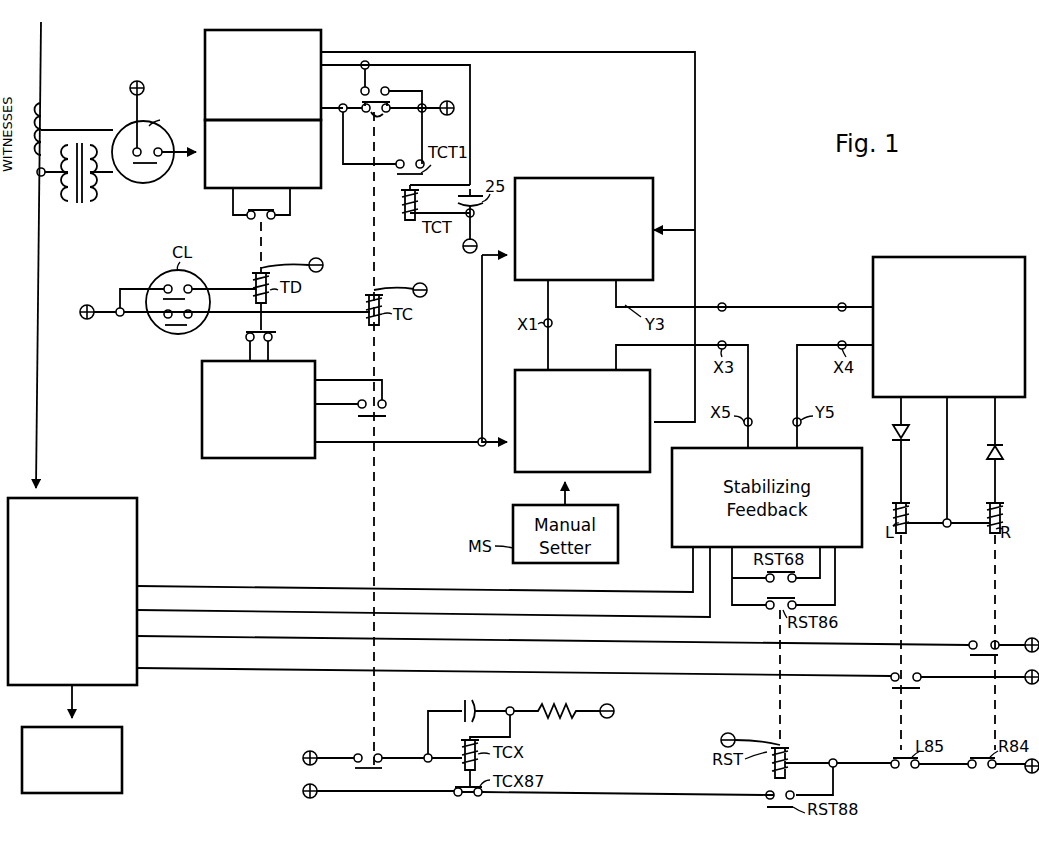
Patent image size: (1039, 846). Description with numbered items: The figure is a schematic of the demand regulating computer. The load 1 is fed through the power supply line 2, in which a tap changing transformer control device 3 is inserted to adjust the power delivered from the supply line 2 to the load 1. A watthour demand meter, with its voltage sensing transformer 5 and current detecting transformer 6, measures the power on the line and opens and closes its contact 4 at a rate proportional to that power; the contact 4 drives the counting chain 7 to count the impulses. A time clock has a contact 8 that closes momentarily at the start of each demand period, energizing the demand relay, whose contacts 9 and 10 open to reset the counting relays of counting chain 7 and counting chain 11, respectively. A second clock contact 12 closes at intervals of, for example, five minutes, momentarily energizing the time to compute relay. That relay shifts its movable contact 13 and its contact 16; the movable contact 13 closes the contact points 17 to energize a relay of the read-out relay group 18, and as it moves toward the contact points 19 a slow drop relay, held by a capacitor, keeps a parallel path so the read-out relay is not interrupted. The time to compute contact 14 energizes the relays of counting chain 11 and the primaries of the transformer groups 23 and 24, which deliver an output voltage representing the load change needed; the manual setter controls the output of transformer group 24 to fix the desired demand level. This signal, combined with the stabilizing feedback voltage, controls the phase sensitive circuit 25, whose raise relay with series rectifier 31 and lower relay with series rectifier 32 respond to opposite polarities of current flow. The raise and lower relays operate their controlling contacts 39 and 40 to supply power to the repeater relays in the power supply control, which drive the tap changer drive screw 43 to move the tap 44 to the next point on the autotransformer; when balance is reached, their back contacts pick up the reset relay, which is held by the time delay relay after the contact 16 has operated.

The load 1 is at (122, 748).
The power supply line 2 is at (38, 377).
The tap changing transformer control device 3 is at (137, 536).
The contact 4 is at (145, 165).
The voltage sensing transformer 5 is at (68, 190).
The current detecting transformer 6 is at (48, 117).
The counting chain 7 is at (312, 190).
The contact 8 is at (188, 299).
The contact 9 is at (265, 212).
The contact 10 is at (276, 340).
The counting chain 11 is at (202, 405).
The contact 12 is at (167, 332).
The movable contact 13 is at (362, 102).
The contact 14 is at (380, 418).
The contact 16 is at (380, 770).
The contact points 17 is at (369, 90).
The read-out relay group 18 is at (205, 47).
The contact points 19 is at (376, 114).
The transformer group 23 is at (558, 178).
The transformer group 24 is at (574, 370).
The phase sensitive circuit 25 is at (974, 257).
The rectifier 31 is at (904, 434).
The rectifier 32 is at (1000, 436).
The contact 39 is at (970, 656).
The contact 40 is at (895, 690).
The drive screw 43 is at (722, 303).
The tap 44 is at (839, 303).